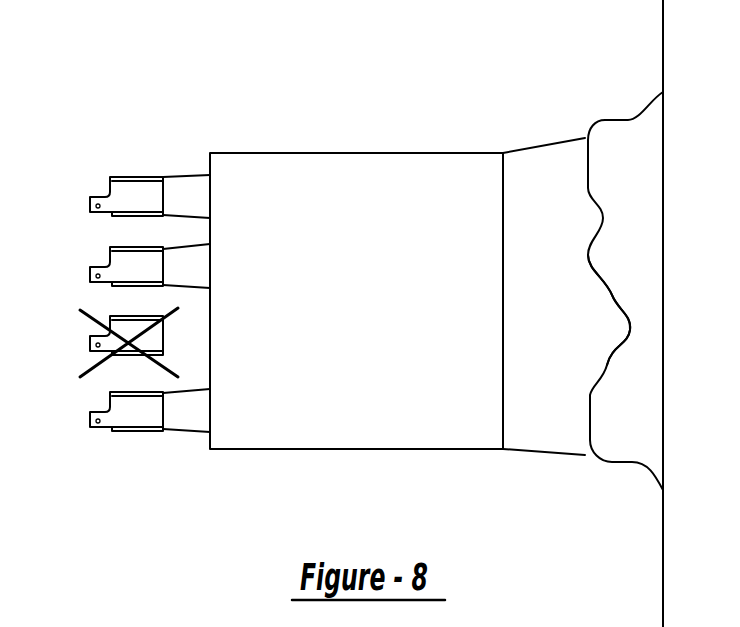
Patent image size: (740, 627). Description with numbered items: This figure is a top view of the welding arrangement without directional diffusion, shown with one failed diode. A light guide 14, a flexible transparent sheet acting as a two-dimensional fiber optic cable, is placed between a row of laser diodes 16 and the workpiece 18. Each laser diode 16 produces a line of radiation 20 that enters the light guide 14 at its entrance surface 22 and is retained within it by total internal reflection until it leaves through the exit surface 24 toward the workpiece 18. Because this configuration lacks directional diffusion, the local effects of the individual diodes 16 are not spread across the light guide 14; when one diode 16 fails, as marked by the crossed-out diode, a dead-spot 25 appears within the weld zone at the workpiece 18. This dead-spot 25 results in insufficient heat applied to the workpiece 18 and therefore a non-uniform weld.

The light guide 14 is at (382, 150).
The laser diode 16 is at (133, 206).
The workpiece 18 is at (588, 107).
The line of radiation 20 is at (188, 187).
The entrance surface 22 is at (210, 440).
The exit surface 24 is at (504, 412).
The dead-spot 25 is at (630, 333).